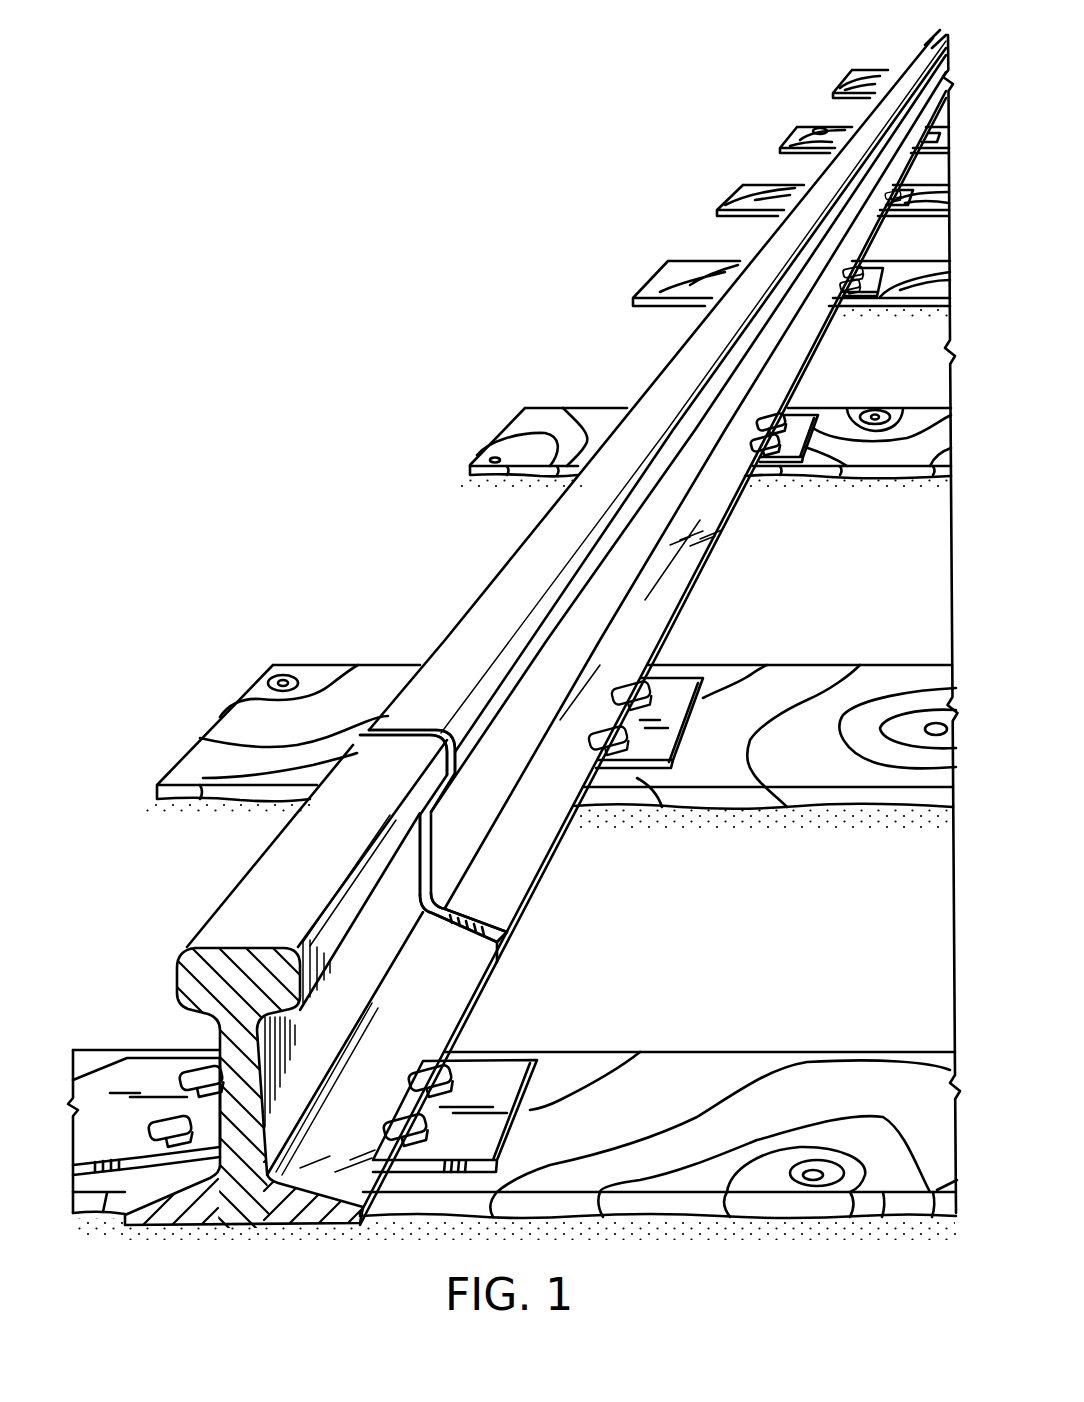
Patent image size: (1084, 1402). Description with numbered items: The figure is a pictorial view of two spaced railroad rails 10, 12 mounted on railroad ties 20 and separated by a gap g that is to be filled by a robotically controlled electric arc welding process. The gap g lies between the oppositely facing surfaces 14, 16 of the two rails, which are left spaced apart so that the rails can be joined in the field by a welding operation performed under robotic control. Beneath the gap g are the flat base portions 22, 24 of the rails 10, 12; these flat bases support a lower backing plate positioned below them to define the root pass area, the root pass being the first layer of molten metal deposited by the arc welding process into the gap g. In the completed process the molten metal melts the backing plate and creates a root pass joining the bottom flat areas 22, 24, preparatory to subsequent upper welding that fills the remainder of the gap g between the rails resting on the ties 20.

The railroad rail 10 is at (252, 883).
The railroad rail 12 is at (503, 570).
The oppositely facing surface 14 is at (408, 728).
The oppositely facing surface 16 is at (403, 729).
The railroad tie 20 is at (688, 267).
The flat base portion 22 is at (500, 965).
The flat base portion 24 is at (508, 937).
The gap g is at (425, 852).